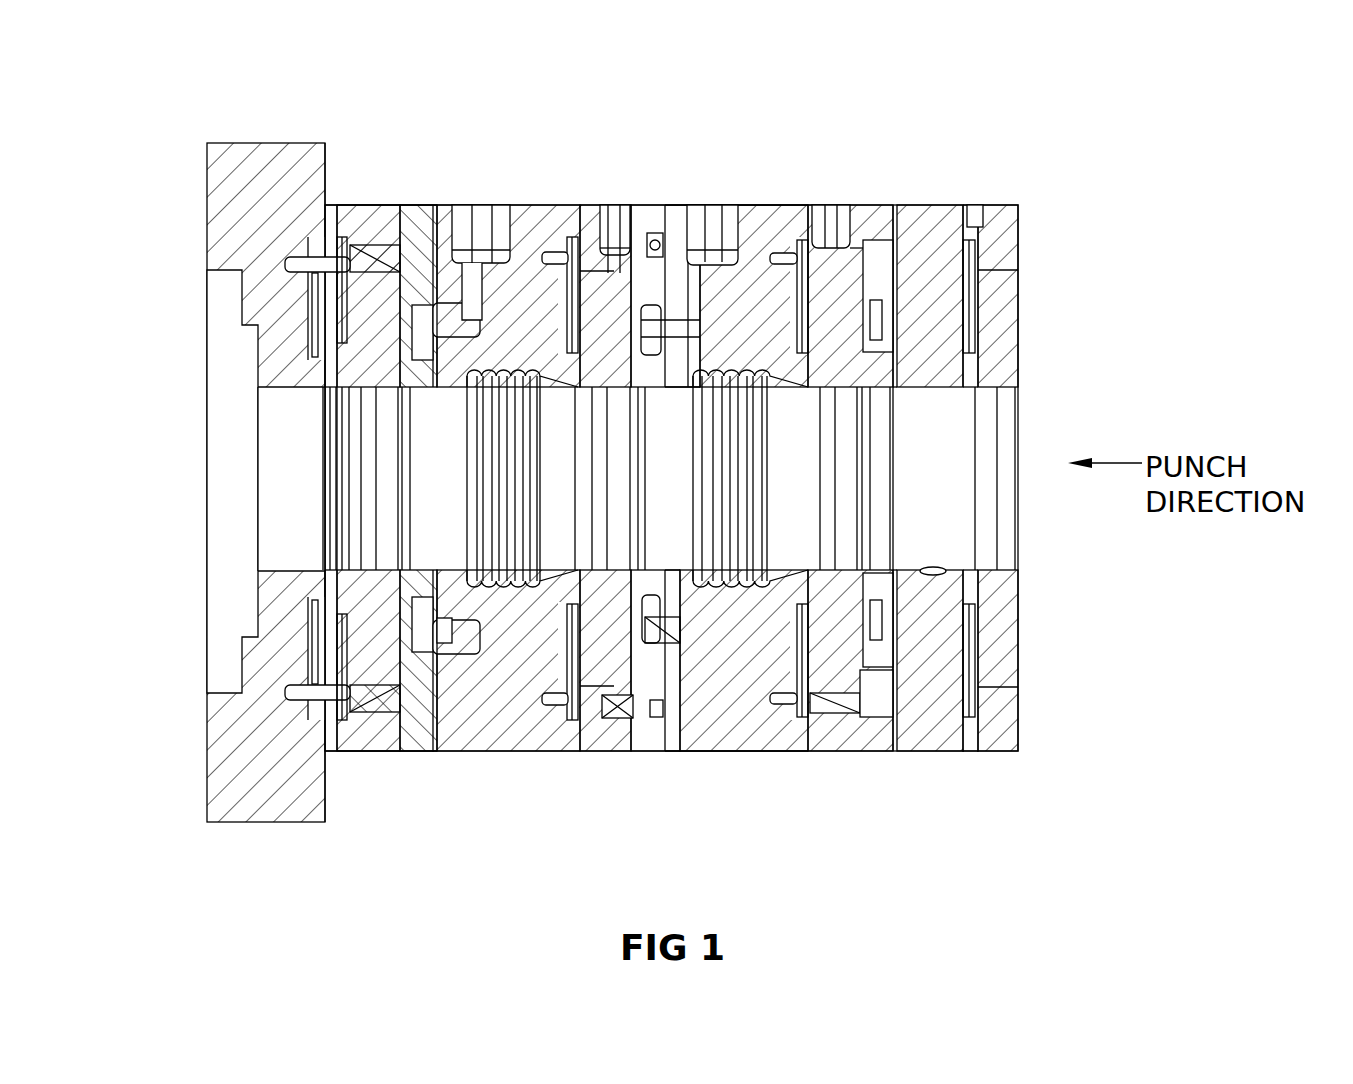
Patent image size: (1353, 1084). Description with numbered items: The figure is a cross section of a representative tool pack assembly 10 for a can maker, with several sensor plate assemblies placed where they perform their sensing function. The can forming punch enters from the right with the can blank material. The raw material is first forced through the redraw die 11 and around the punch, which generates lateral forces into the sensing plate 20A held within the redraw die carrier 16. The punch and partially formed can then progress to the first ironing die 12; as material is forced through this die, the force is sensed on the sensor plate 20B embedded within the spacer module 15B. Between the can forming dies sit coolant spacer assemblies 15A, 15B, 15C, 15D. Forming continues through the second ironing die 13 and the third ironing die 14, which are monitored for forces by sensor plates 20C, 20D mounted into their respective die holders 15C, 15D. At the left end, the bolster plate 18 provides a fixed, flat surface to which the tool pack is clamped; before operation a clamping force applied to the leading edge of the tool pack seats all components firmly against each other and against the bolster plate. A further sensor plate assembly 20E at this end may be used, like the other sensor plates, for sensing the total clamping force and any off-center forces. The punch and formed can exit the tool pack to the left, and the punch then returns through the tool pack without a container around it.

The tool pack assembly 10 is at (750, 442).
The redraw die 11 is at (1064, 478).
The first ironing die 12 is at (902, 421).
The second ironing die 13 is at (669, 438).
The third ironing die 14 is at (464, 419).
The coolant spacer assembly 15A is at (909, 527).
The spacer module 15B is at (753, 519).
The die holder 15C is at (511, 519).
The die holder 15D is at (449, 420).
The redraw die carrier 16 is at (1000, 522).
The bolster plate 18 is at (248, 432).
The sensing plate 20A is at (1077, 425).
The sensor plate 20B is at (880, 477).
The sensor plate 20C is at (640, 468).
The sensor plate 20D is at (440, 466).
The sensor plate assembly 20E is at (222, 447).